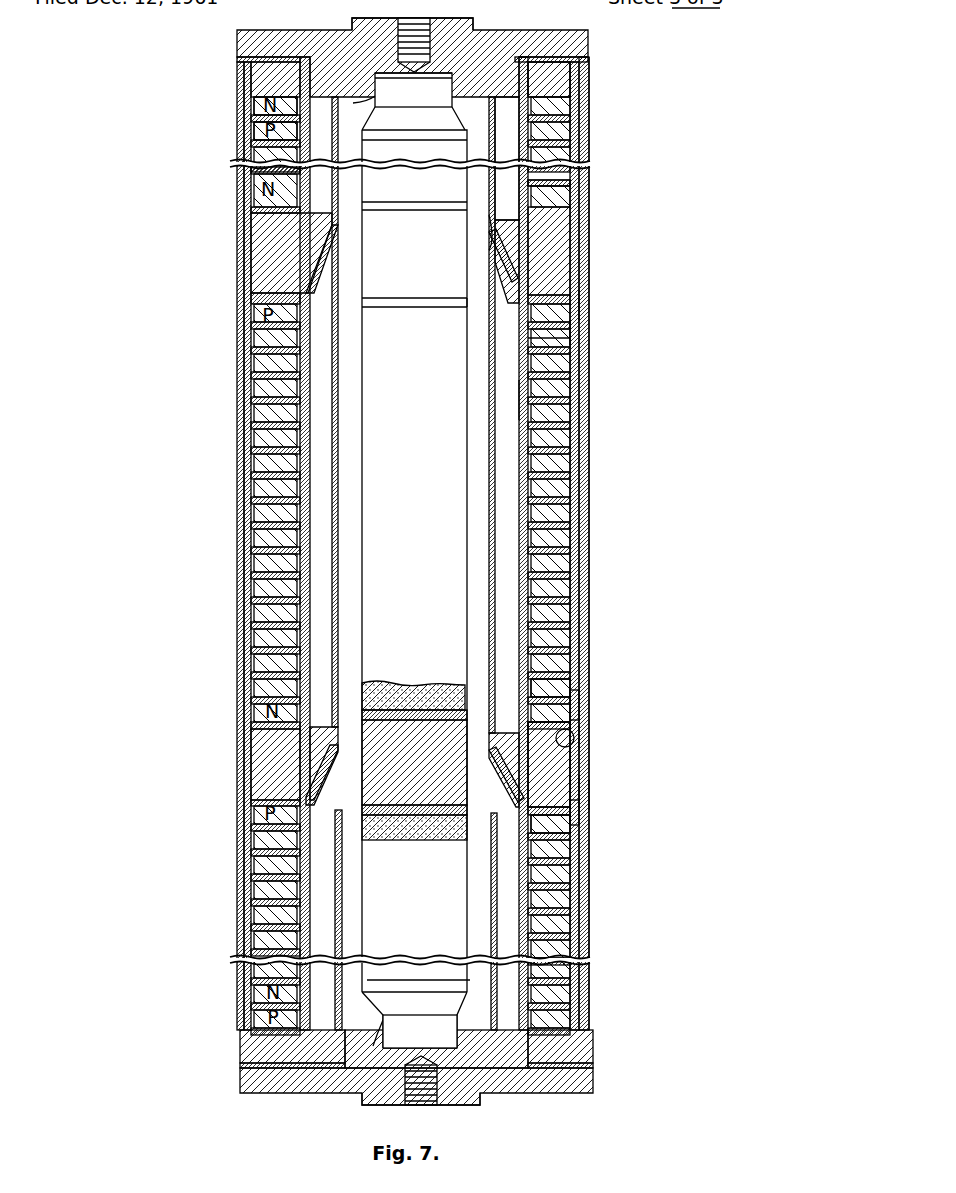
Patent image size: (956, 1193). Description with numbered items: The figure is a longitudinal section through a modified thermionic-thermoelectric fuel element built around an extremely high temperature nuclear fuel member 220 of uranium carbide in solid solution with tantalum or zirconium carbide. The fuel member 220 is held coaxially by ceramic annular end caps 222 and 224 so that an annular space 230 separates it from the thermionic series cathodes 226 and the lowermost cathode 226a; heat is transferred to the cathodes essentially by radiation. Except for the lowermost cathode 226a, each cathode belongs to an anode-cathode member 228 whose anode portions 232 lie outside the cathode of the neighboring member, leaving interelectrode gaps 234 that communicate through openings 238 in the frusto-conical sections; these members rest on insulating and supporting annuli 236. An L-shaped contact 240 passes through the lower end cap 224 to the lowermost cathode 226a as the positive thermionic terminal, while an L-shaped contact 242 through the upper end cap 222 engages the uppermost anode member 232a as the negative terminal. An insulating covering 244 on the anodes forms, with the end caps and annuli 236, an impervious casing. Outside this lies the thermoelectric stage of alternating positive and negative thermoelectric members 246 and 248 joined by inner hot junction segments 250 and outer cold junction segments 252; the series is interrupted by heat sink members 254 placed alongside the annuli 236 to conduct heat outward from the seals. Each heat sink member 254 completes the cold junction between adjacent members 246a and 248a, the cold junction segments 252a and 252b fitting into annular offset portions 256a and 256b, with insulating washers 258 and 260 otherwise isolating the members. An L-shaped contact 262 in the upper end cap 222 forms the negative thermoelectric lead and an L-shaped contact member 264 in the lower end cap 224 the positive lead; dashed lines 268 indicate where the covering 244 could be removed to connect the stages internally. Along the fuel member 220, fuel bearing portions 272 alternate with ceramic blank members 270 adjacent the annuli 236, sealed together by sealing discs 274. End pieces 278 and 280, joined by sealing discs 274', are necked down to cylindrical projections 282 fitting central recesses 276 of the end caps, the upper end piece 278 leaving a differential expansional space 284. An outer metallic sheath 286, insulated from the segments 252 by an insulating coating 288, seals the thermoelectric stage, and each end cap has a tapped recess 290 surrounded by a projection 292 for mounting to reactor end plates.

The nuclear fuel member 220 is at (589, 279).
The upper end cap 222 is at (308, 33).
The lower end cap 224 is at (262, 1088).
The thermionic series cathodes 226 is at (489, 200).
The lowermost cathode 226a is at (491, 883).
The anode-cathode member 228 is at (518, 807).
The annular space 230 is at (470, 353).
The anode portions 232 is at (521, 396).
The uppermost anode member 232a is at (520, 186).
The interelectrode gaps 234 is at (502, 211).
The insulating and supporting annuli 236 is at (517, 787).
The openings 238 is at (488, 244).
The L-shaped contact 240 is at (262, 1058).
The L-shaped contact 242 is at (573, 56).
The insulating covering 244 is at (531, 339).
The positive thermoelectric members 246 is at (258, 131).
The positive thermoelectric member 246a is at (530, 695).
The negative thermoelectric members 248 is at (258, 106).
The negative thermoelectric member 248a is at (580, 832).
The inner tubular segments 250 is at (312, 82).
The outer tubular segments 252 is at (240, 175).
The cold junction segment 252a is at (576, 706).
The cold junction segment 252b is at (586, 811).
The heat sink members 254 is at (589, 762).
The annular offset portion 256a is at (589, 737).
The annular offset portion 256b is at (590, 798).
The insulating washer 258 is at (578, 746).
The insulating washer 260 is at (560, 792).
The L-shaped contact 262 is at (244, 52).
The L-shaped contact member 264 is at (586, 1054).
The dashed lines 268 is at (586, 105).
The blank members 270 is at (369, 278).
The fuel bearing portions 272 is at (470, 308).
The sealing discs 274 is at (414, 223).
The sealing discs 274' is at (418, 560).
The central recess 276 is at (353, 105).
The upper end piece 278 is at (443, 125).
The lower end piece 280 is at (432, 993).
The cylindrical projection 282 is at (375, 81).
The differential expansional space 284 is at (450, 79).
The outer metallic sheath 286 is at (589, 301).
The insulating coating 288 is at (568, 333).
The recesses 290 is at (397, 30).
The projections 292 is at (478, 22).